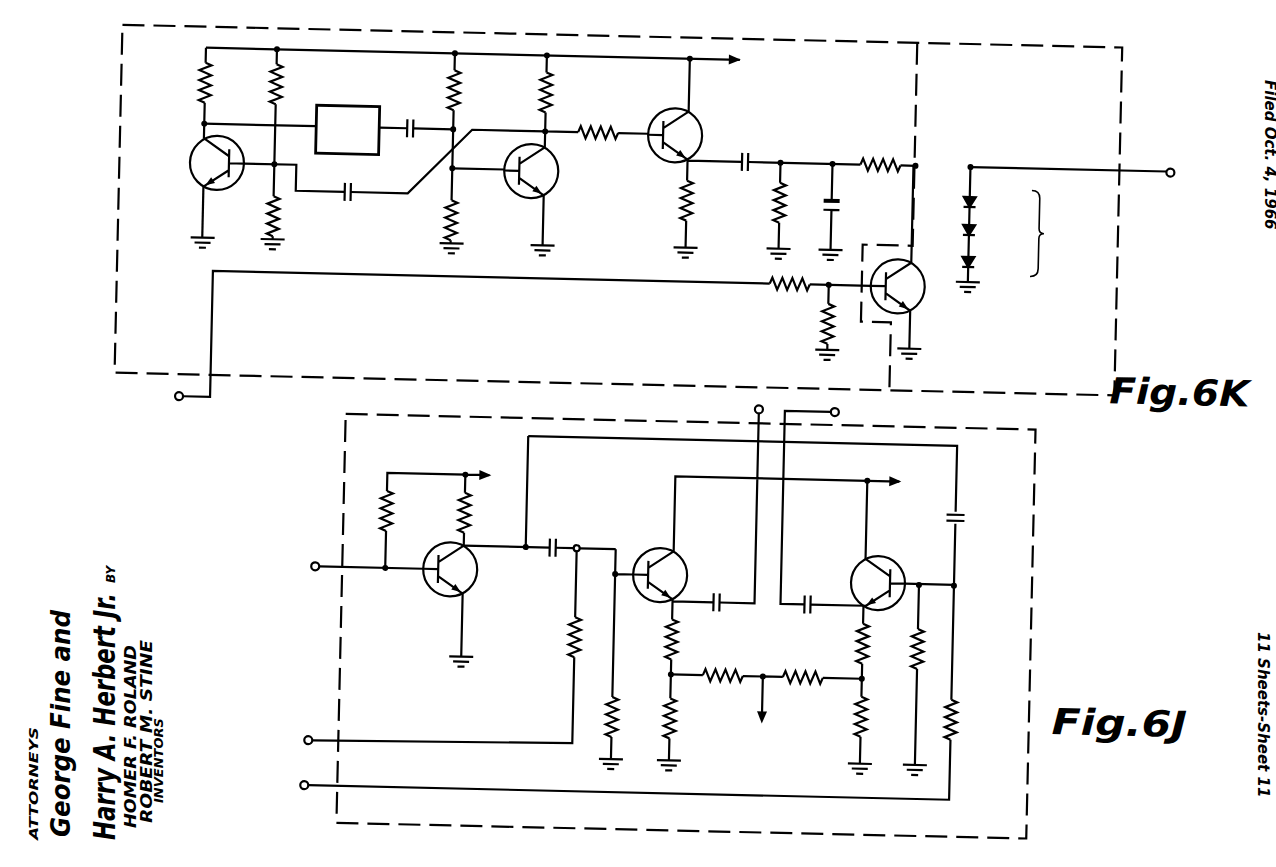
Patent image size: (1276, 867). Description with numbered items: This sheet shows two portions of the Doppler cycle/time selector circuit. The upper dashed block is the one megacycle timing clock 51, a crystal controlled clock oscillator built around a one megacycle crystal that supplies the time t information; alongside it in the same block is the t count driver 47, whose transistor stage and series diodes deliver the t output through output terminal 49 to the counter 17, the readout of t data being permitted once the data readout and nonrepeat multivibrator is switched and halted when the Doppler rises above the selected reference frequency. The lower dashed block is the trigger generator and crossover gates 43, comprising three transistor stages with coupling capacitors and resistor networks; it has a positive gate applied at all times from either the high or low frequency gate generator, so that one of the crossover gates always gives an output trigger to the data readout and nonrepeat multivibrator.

In FIG. 6K, the 1 mc. timing clock 51 is at (646, 370).
In FIG. 6K, the t count driver 47 is at (1123, 323).
In FIG. 6K, the t output terminal to counter 49 is at (1171, 150).
In FIG. 6K, the counter 17 is at (1180, 144).
In FIG. 6J, the trigger generator and crossover gates 43 is at (1045, 789).